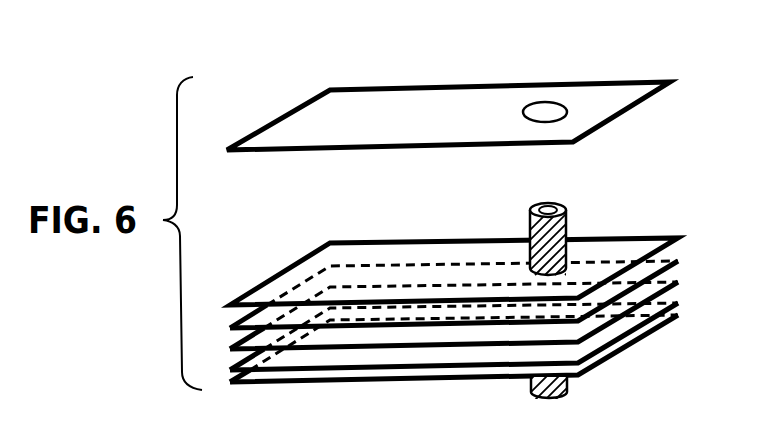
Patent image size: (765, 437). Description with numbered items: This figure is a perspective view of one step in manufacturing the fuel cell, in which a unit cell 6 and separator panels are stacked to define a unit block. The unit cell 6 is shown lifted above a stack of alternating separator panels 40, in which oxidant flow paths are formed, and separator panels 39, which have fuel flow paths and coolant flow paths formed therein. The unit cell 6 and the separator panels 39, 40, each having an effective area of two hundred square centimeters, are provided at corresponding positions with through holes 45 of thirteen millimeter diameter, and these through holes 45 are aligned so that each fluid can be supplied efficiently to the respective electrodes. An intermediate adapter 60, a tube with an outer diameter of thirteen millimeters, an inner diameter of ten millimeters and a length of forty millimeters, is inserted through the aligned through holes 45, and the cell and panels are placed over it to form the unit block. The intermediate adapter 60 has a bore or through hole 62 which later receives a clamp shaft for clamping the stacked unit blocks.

The unit cell 6 is at (293, 110).
The through holes 45 is at (548, 102).
The separator panel 40 is at (677, 238).
The separator panel 39 is at (677, 263).
The intermediate adapter 60 is at (527, 236).
The through hole 62 is at (549, 204).